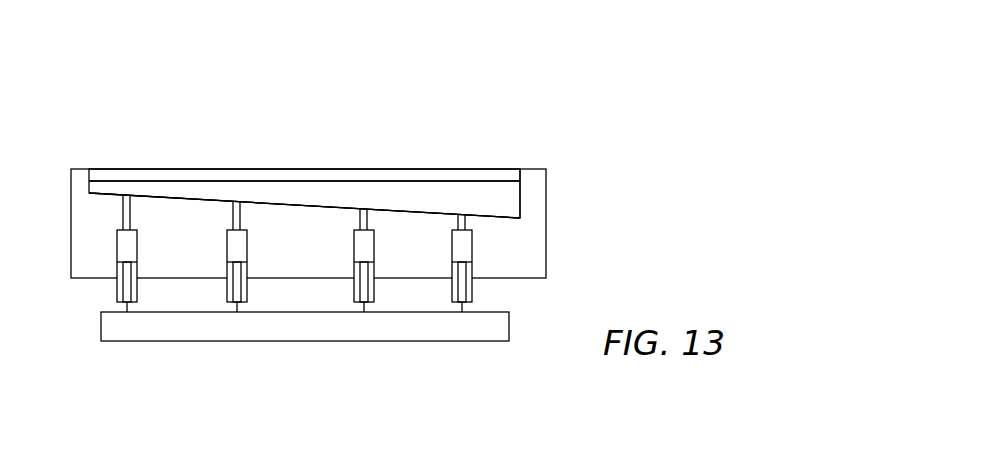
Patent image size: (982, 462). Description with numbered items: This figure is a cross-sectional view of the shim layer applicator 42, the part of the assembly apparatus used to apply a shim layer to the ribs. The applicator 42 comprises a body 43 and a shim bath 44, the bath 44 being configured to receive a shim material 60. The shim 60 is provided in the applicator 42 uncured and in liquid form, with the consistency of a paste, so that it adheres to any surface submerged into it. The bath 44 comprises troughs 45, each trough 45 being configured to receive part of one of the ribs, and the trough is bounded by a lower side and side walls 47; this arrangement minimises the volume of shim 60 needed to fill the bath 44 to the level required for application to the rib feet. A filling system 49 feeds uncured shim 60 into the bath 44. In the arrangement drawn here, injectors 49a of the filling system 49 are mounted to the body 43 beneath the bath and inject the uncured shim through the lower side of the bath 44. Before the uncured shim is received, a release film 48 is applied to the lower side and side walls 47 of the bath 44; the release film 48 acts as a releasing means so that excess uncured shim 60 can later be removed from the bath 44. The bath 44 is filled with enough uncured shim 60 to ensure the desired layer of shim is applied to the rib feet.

The applicator 42 is at (522, 96).
The body 43 is at (87, 258).
The shim bath 44 is at (200, 187).
The trough 45 is at (442, 205).
The side walls 47 is at (521, 186).
The release film 48 is at (294, 203).
The filling system 49 is at (300, 328).
The injectors 49a is at (233, 307).
The shim material 60 is at (365, 192).